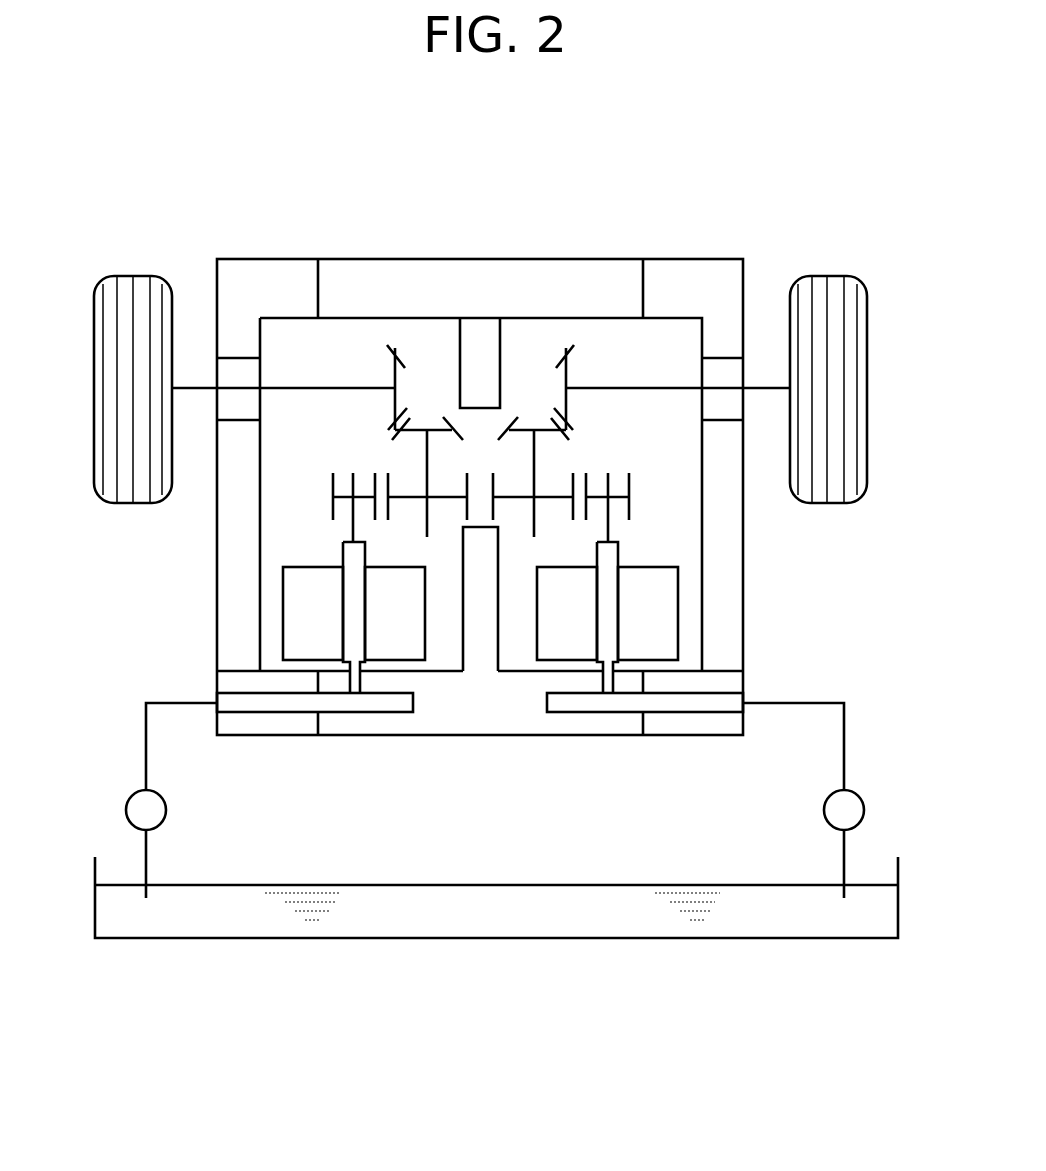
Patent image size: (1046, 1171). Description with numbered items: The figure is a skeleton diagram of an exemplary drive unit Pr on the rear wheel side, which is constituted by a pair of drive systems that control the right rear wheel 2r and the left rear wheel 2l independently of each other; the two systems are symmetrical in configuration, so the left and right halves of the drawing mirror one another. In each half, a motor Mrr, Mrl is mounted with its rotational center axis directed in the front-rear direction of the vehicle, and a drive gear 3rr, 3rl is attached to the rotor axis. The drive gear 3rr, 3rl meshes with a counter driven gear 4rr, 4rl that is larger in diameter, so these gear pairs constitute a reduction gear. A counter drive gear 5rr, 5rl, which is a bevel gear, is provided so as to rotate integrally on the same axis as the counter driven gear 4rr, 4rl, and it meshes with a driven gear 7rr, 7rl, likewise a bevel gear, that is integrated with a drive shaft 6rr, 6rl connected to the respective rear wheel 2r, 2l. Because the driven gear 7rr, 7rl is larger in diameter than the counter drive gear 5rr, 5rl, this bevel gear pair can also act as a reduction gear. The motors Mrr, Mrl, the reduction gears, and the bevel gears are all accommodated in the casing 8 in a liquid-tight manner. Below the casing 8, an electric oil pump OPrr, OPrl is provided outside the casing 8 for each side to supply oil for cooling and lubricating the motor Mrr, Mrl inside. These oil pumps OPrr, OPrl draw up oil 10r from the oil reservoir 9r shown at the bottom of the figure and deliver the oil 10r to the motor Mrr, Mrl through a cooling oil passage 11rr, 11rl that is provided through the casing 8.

The drive unit Pr is at (657, 236).
The left rear wheel 2l is at (125, 276).
The right rear wheel 2r is at (832, 276).
The drive gear 3rl is at (333, 497).
The drive gear 3rr is at (631, 497).
The counter driven gear 4rl is at (402, 497).
The counter driven gear 4rr is at (571, 503).
The counter drive gear 5rl is at (392, 432).
The counter drive gear 5rr is at (572, 432).
The drive shaft 6rl is at (330, 387).
The drive shaft 6rr is at (648, 387).
The driven gear 7rl is at (401, 360).
The driven gear 7rr is at (557, 363).
The casing 8 is at (478, 736).
The oil reservoir 9r is at (540, 940).
The oil 10r is at (457, 897).
The cooling oil passage 11rl is at (146, 720).
The cooling oil passage 11rr is at (847, 710).
The motor Mrl is at (283, 625).
The motor Mrr is at (678, 625).
The electric oil pump OPrl is at (128, 800).
The electric oil pump OPrr is at (864, 810).